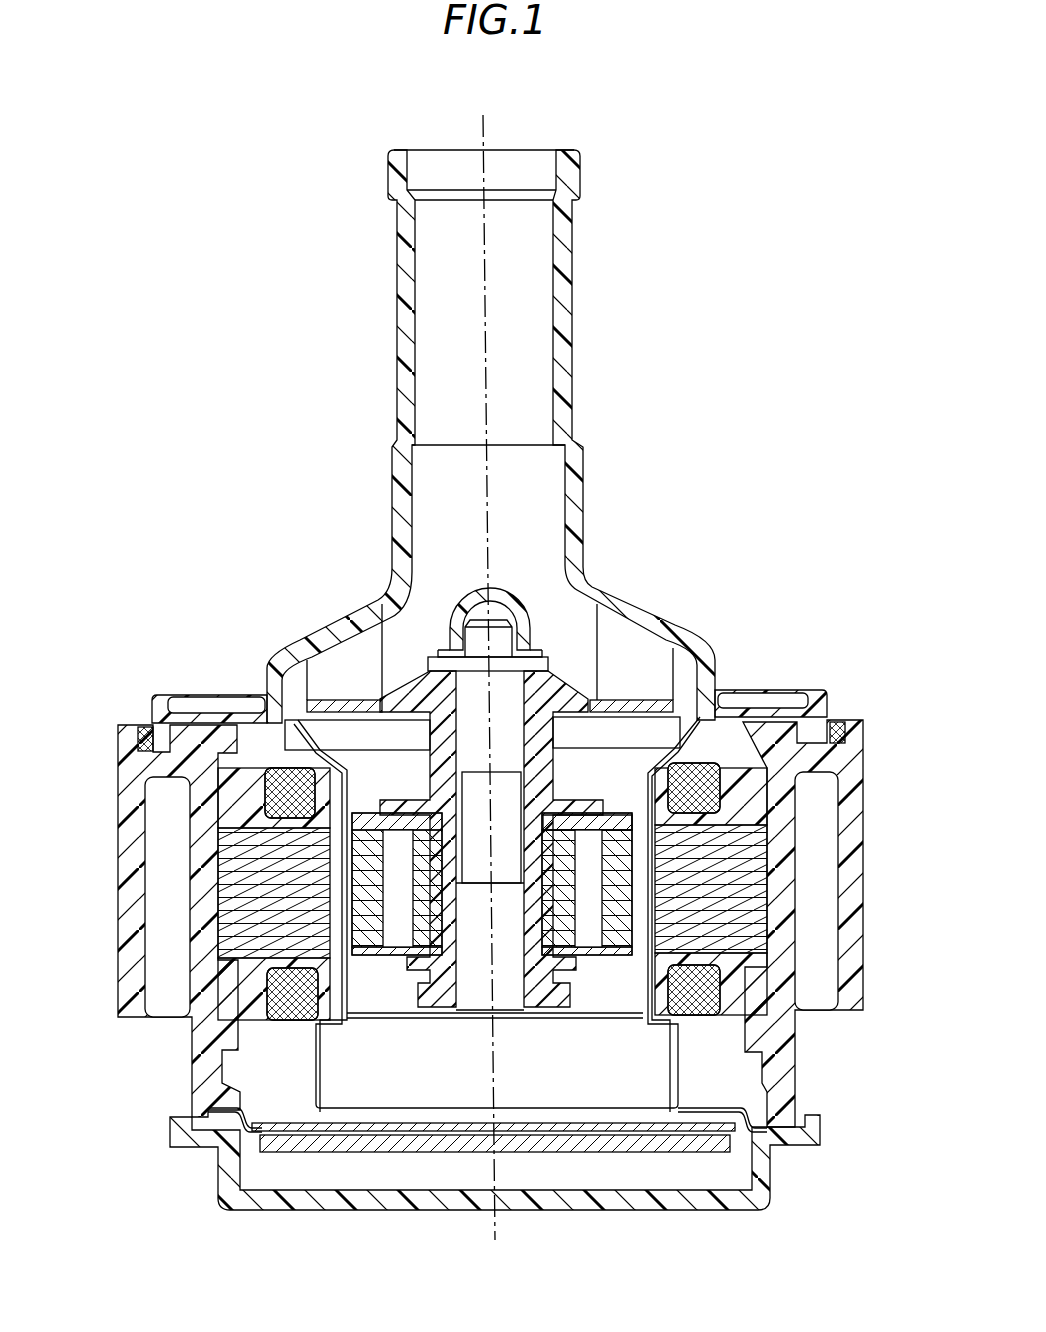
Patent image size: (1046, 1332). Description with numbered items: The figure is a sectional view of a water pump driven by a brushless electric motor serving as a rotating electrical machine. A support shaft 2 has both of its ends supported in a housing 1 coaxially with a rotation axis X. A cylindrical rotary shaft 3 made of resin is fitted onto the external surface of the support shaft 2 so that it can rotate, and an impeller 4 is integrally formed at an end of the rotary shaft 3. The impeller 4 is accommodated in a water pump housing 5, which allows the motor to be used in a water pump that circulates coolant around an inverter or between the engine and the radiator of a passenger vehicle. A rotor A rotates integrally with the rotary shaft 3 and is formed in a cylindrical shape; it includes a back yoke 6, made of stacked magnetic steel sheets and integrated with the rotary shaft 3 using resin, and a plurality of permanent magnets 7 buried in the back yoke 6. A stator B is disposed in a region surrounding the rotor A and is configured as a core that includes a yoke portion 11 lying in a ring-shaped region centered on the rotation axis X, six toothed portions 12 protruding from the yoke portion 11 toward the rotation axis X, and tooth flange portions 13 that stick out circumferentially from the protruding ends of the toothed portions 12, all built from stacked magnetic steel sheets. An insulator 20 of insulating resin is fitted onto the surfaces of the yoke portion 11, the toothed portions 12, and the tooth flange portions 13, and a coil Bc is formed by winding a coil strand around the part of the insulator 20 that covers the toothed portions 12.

The housing 1 is at (866, 790).
The support shaft 2 is at (518, 760).
The rotary shaft 3 is at (426, 779).
The impeller 4 is at (342, 637).
The water pump housing 5 is at (582, 547).
The back yoke 6 is at (610, 1019).
The permanent magnets 7 is at (398, 947).
The yoke portion 11 is at (800, 884).
The toothed portions 12 is at (218, 900).
The tooth flange portions 13 is at (352, 956).
The insulator 20 is at (798, 743).
The rotor A is at (621, 765).
The stator B is at (721, 736).
The coil Bc is at (290, 778).
The rotation axis X is at (490, 126).